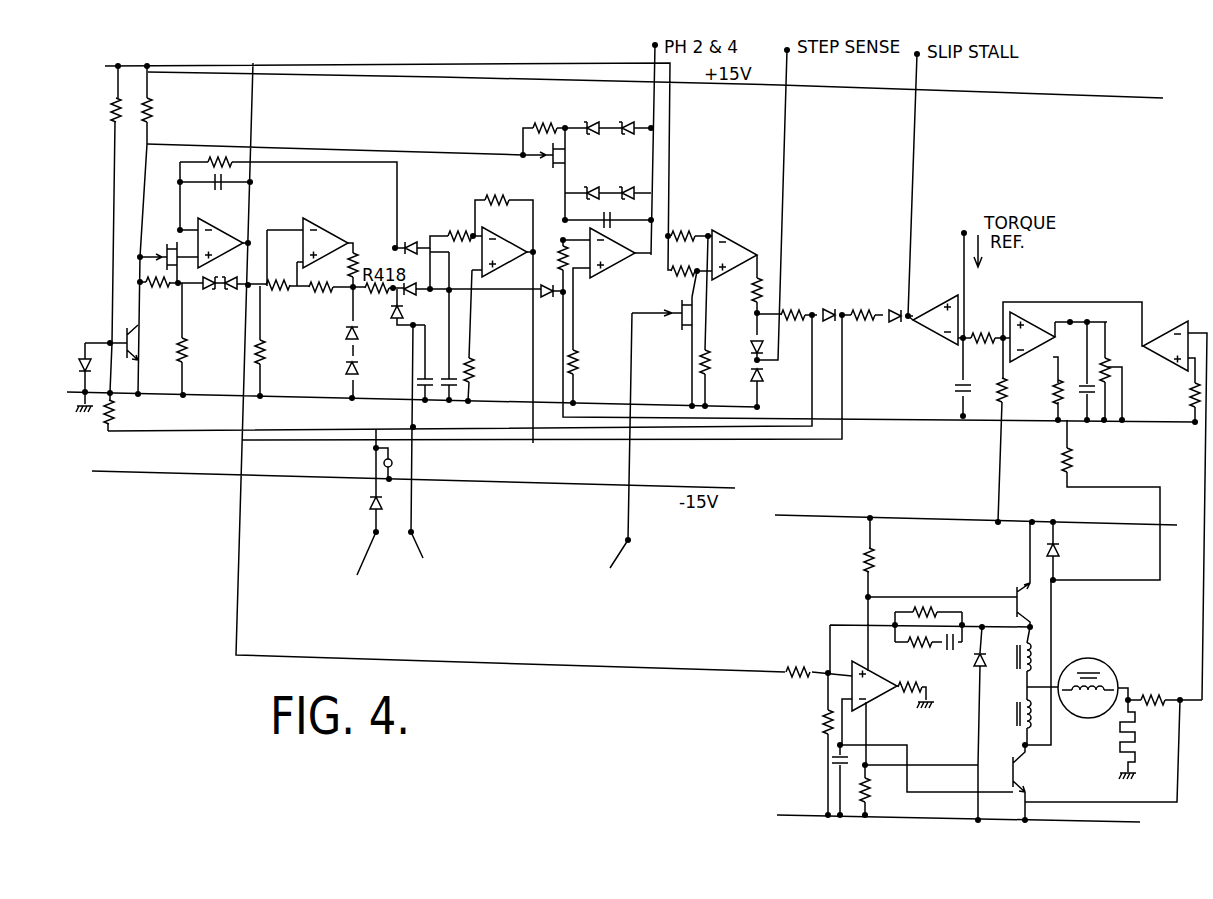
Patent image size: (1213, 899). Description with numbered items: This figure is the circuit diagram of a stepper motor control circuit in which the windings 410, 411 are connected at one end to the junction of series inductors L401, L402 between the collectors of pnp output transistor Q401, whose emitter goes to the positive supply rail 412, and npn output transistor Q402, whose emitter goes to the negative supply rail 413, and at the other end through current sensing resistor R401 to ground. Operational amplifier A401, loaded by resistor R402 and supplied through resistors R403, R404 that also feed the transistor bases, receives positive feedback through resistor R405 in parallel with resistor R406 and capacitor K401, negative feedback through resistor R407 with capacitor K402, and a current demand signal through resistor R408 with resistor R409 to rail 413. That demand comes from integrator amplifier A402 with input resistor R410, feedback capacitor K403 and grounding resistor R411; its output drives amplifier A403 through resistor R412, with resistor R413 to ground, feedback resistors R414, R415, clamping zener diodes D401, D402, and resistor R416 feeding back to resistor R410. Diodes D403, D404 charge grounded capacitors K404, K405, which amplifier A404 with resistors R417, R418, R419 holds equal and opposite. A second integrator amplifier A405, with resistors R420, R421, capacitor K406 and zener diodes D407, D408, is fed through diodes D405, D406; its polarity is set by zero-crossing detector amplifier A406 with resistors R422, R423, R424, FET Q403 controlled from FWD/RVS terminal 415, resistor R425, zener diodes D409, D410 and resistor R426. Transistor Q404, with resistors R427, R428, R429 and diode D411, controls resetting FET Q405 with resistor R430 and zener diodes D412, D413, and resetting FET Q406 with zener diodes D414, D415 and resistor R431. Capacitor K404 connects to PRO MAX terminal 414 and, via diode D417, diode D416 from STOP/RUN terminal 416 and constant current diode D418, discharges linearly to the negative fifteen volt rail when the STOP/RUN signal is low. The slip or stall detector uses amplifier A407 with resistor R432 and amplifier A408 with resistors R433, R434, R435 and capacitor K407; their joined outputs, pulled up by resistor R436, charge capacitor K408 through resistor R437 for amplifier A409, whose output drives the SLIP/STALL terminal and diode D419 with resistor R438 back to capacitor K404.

The current sensing resistor R401 is at (1118, 745).
The load resistor R402 is at (930, 687).
The resistor R403 is at (874, 562).
The resistor R404 is at (870, 792).
The resistor R405 is at (920, 608).
The resistor R406 is at (909, 648).
The resistor R407 is at (1158, 686).
The resistor R408 is at (796, 668).
The resistor R409 is at (820, 722).
The input resistor R410 is at (218, 157).
The resistor R411 is at (207, 339).
The resistor R412 is at (282, 292).
The resistor R413 is at (282, 341).
The resistor R414 is at (374, 276).
The resistor R415 is at (330, 292).
The resistor R416 is at (344, 279).
The resistor R417 is at (455, 228).
The resistor R418 is at (472, 372).
The feedback resistor R419 is at (500, 196).
The resistor R420 is at (580, 362).
The input resistor R421 is at (553, 264).
The resistor R422 is at (688, 230).
The resistor R423 is at (678, 276).
The resistor R424 is at (720, 352).
The resistor R425 is at (752, 290).
The resistor R426 is at (796, 305).
The resistor R427 is at (150, 110).
The resistor R428 is at (114, 100).
The resistor R429 is at (104, 421).
The resistor R430 is at (157, 292).
The resistor R431 is at (540, 124).
The resistor R432 is at (1190, 395).
The resistor R433 is at (1055, 397).
The resistor R434 is at (1062, 470).
The variable resistor R435 is at (1125, 370).
The resistor R436 is at (1001, 380).
The resistor R437 is at (987, 329).
The resistor R438 is at (866, 325).
The zener diode D401 is at (346, 333).
The zener diode D402 is at (350, 385).
The diode D403 is at (403, 294).
The diode D404 is at (411, 240).
The diode D405 is at (833, 305).
The diode D406 is at (540, 294).
The zener diode D407 is at (600, 178).
The zener diode D408 is at (630, 185).
The zener diode D409 is at (750, 355).
The zener diode D410 is at (762, 375).
The diode D411 is at (82, 350).
The zener diode D412 is at (208, 292).
The zener diode D413 is at (232, 292).
The zener diode D414 is at (595, 120).
The zener diode D415 is at (632, 120).
The diode D416 is at (365, 506).
The diode D417 is at (397, 330).
The constant current diode D418 is at (396, 475).
The diode D419 is at (905, 325).
The capacitor K401 is at (952, 652).
The capacitor K402 is at (830, 763).
The feedback capacitor K403 is at (236, 198).
The capacitor K404 is at (418, 390).
The capacitor K405 is at (450, 392).
The feedback capacitor K406 is at (612, 228).
The capacitor K407 is at (1089, 396).
The capacitor K408 is at (958, 392).
The operational amplifier A401 is at (875, 710).
The operational amplifier A402 is at (230, 238).
The amplifier A403 is at (325, 237).
The amplifier A404 is at (500, 270).
The operational amplifier A405 is at (607, 275).
The operational amplifier A406 is at (735, 247).
The operational amplifier A407 is at (1158, 338).
The operational amplifier A408 is at (1035, 355).
The amplifier A409 is at (940, 300).
The pnp output transistor Q401 is at (1020, 590).
The npn output transistor Q402 is at (1020, 768).
The FET Q403 is at (680, 325).
The npn transistor Q404 is at (148, 356).
The FET Q405 is at (167, 253).
The FET Q406 is at (553, 170).
The inductor L401 is at (1012, 668).
The inductor L402 is at (1012, 724).
The winding 410 is at (1105, 665).
The winding 411 is at (1088, 681).
The positive supply rail 412 is at (908, 518).
The negative supply rail 413 is at (996, 805).
The PRO MAX terminal 414 is at (449, 554).
The FWD/RVS input terminal 415 is at (650, 561).
The STOP/RUN terminal 416 is at (334, 559).